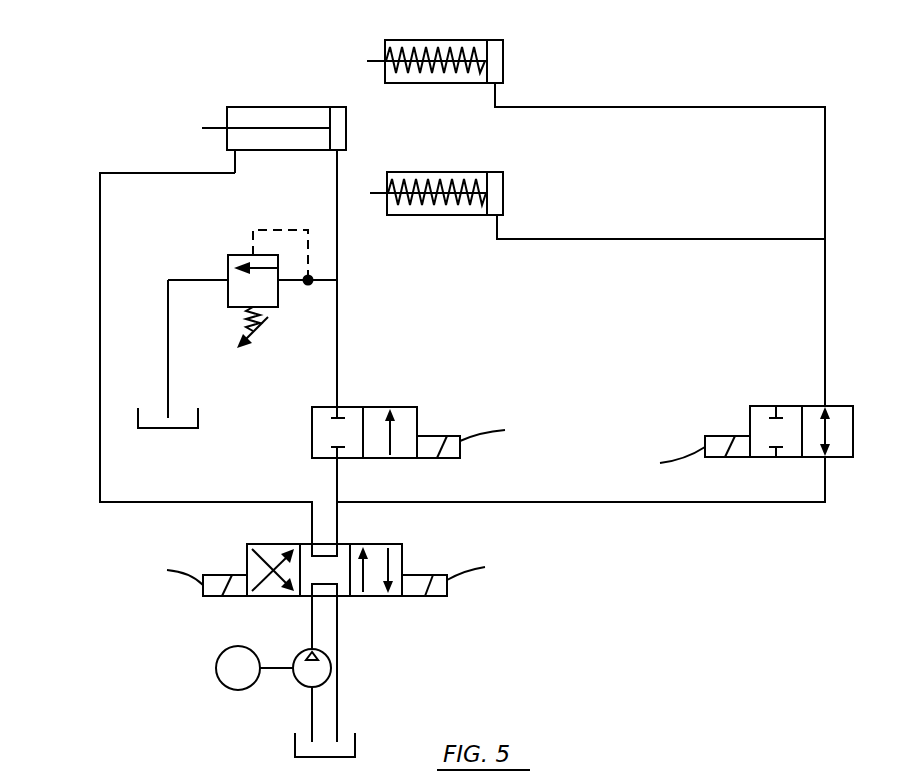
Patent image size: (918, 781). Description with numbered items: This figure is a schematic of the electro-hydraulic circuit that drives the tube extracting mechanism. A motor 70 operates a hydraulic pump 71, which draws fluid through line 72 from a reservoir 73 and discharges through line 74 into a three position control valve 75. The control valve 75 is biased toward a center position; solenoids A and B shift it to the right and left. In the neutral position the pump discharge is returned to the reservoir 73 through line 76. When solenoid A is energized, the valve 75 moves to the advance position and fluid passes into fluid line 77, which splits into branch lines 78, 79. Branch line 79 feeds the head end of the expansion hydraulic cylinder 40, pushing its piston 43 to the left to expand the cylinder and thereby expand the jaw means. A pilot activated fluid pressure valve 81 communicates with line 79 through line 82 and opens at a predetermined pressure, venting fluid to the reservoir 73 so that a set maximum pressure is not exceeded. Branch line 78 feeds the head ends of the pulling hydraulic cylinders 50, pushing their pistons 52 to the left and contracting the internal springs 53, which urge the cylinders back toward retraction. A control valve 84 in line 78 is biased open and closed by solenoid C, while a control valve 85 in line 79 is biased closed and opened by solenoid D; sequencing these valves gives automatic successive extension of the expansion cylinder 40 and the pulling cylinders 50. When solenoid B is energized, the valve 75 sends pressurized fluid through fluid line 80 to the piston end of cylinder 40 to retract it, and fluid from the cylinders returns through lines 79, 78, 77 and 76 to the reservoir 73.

The expansion hydraulic cylinder 40 is at (263, 105).
The piston 43 is at (338, 118).
The pulling hydraulic cylinders 50 is at (418, 40).
The pistons 52 is at (496, 62).
The springs 53 is at (424, 83).
The motor 70 is at (216, 660).
The hydraulic pump 71 is at (295, 655).
The line 72 is at (310, 722).
The reservoir 73 is at (175, 430).
The line 74 is at (310, 625).
The three position control valve 75 is at (247, 542).
The line 76 is at (342, 630).
The fluid line 77 is at (342, 527).
The branch line 78 is at (562, 503).
The branch line 79 is at (335, 472).
The fluid line 80 is at (100, 450).
The pilot activated fluid pressure valve 81 is at (228, 252).
The line 82 is at (320, 283).
The control valve 84 is at (750, 405).
The control valve 85 is at (417, 405).